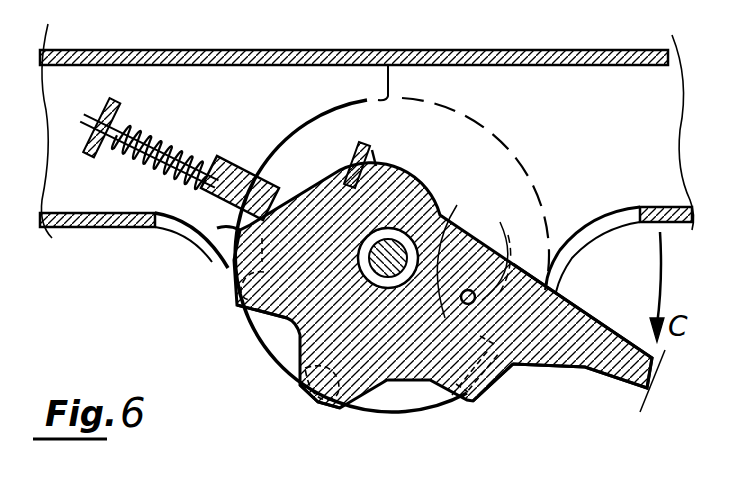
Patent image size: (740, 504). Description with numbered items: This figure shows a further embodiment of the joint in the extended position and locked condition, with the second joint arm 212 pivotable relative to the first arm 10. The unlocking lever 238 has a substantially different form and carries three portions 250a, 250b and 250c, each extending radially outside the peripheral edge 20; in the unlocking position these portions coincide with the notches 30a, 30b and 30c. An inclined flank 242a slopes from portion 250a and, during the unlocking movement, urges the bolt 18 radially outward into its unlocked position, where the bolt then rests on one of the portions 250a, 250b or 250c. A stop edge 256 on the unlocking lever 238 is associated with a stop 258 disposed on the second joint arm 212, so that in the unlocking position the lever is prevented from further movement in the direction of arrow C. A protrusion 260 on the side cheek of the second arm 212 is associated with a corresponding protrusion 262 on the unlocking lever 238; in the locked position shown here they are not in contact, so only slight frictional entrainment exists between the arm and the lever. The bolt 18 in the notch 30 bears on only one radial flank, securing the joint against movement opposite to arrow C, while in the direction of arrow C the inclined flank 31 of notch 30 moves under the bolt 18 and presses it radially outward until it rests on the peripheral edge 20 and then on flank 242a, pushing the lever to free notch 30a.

The first arm 10 is at (227, 84).
The second joint arm 212 is at (560, 75).
The inclined flank 242a is at (297, 172).
The bolt 18 is at (223, 158).
The stop edge 256 is at (349, 153).
The stop 258 is at (378, 164).
The protrusion 260 is at (457, 205).
The protrusion 262 is at (508, 235).
The unlocking lever 238 is at (555, 311).
The notch 30 is at (200, 236).
The inclined flank 31 is at (214, 258).
The notch 30a is at (254, 277).
The notch 30b is at (330, 400).
The notch 30c is at (487, 393).
The peripheral edge 20 is at (266, 342).
The portion 250a is at (243, 306).
The portion 250b is at (334, 412).
The portion 250c is at (503, 370).